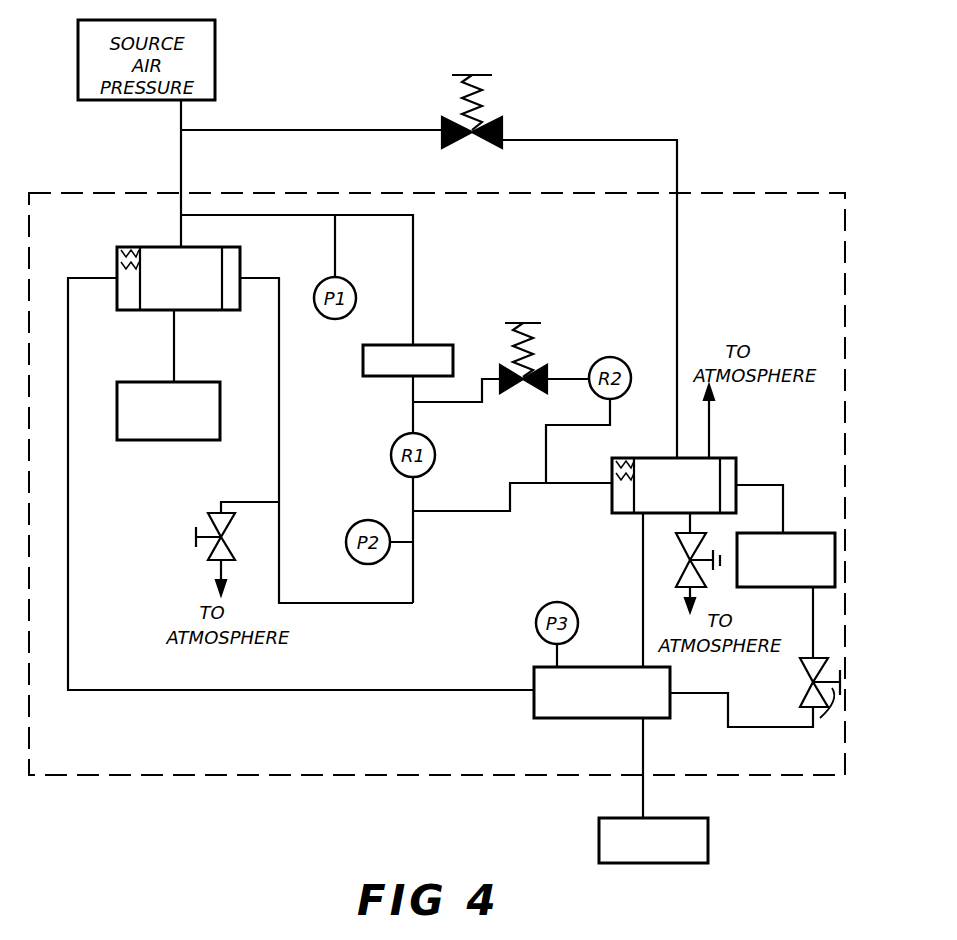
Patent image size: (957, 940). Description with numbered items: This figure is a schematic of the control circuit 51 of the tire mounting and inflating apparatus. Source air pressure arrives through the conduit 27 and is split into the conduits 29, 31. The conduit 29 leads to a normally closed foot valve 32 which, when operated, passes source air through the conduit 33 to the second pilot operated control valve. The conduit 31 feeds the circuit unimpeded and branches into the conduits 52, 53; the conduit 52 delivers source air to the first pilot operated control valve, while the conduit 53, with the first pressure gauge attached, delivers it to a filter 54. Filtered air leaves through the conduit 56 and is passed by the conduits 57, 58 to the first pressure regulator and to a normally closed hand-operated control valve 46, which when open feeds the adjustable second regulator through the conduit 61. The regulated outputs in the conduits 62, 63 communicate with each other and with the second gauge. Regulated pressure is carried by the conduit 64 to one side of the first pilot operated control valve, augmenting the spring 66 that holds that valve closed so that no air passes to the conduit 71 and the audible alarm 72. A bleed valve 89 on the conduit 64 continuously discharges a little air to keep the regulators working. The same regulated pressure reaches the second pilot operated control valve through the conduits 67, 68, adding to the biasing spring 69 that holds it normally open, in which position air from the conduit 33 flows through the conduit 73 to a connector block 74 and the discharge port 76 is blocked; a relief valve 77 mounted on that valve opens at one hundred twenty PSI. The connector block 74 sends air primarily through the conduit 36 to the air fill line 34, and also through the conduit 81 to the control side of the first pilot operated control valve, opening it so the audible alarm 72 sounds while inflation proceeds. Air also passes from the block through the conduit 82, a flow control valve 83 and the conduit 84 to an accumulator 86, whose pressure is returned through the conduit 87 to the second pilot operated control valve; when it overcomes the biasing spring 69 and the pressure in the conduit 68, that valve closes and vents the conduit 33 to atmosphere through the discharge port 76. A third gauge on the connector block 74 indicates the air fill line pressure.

The conduit 27 is at (181, 116).
The conduit 29 is at (318, 128).
The conduit 31 is at (181, 157).
The foot valve 32 is at (486, 118).
The conduit 33 is at (612, 140).
The air fill line 34 is at (708, 852).
The conduit 36 is at (643, 785).
The hand-operated control valve 46 is at (536, 370).
The control circuit 51 is at (752, 193).
The conduit 52 is at (181, 230).
The conduit 53 is at (313, 215).
The filter 54 is at (440, 345).
The conduit 56 is at (413, 388).
The conduit 57 is at (413, 420).
The conduit 58 is at (460, 402).
The conduit 61 is at (565, 385).
The conduit 62 is at (413, 500).
The conduit 63 is at (572, 430).
The conduit 64 is at (350, 603).
The spring 66 is at (118, 255).
The conduit 67 is at (470, 511).
The conduit 68 is at (545, 485).
The biasing spring 69 is at (626, 458).
The conduit 71 is at (174, 358).
The audible alarm 72 is at (198, 442).
The conduit 73 is at (643, 540).
The connector block 74 is at (617, 665).
The discharge port 76 is at (710, 440).
The relief valve 77 is at (708, 573).
The conduit 81 is at (436, 690).
The conduit 82 is at (728, 720).
The flow control valve 83 is at (826, 712).
The conduit 84 is at (813, 640).
The accumulator 86 is at (805, 533).
The conduit 87 is at (760, 485).
The bleed valve 89 is at (205, 504).